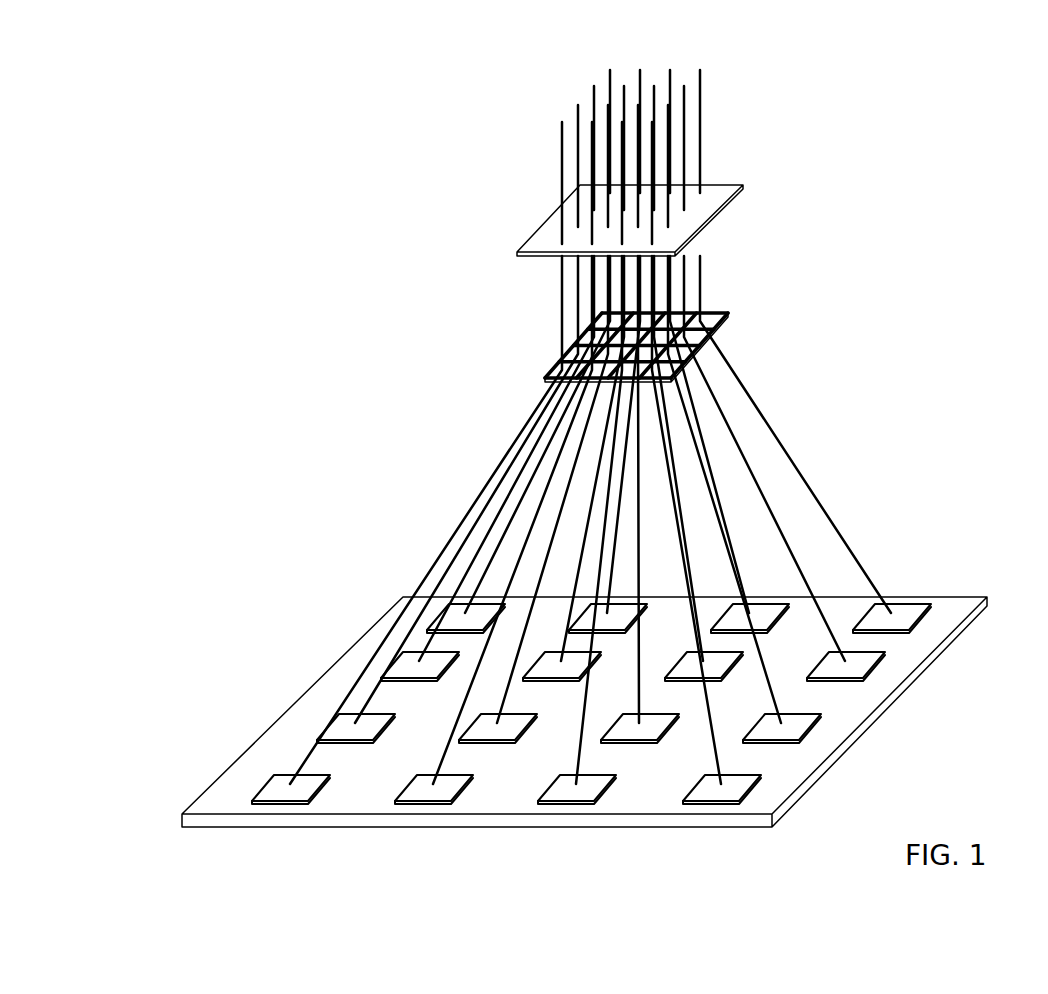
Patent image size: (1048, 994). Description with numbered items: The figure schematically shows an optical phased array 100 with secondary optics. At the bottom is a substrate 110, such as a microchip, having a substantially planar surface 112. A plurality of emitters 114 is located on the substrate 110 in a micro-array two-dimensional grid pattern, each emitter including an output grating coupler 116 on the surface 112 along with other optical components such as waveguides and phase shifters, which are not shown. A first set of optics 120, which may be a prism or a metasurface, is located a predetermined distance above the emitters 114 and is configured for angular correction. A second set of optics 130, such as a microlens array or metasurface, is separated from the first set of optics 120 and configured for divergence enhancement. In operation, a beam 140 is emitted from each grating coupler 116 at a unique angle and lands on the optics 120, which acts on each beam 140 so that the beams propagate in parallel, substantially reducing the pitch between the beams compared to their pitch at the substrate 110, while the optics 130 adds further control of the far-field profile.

The optical phased array 100 is at (400, 346).
The substrate 110 is at (946, 664).
The substantially planar surface 112 is at (811, 756).
The emitters 114 is at (925, 618).
The output grating couplers 116 is at (907, 616).
The first set of optics 120 is at (731, 315).
The second set of optics 130 is at (745, 188).
The beam 140 is at (436, 560).